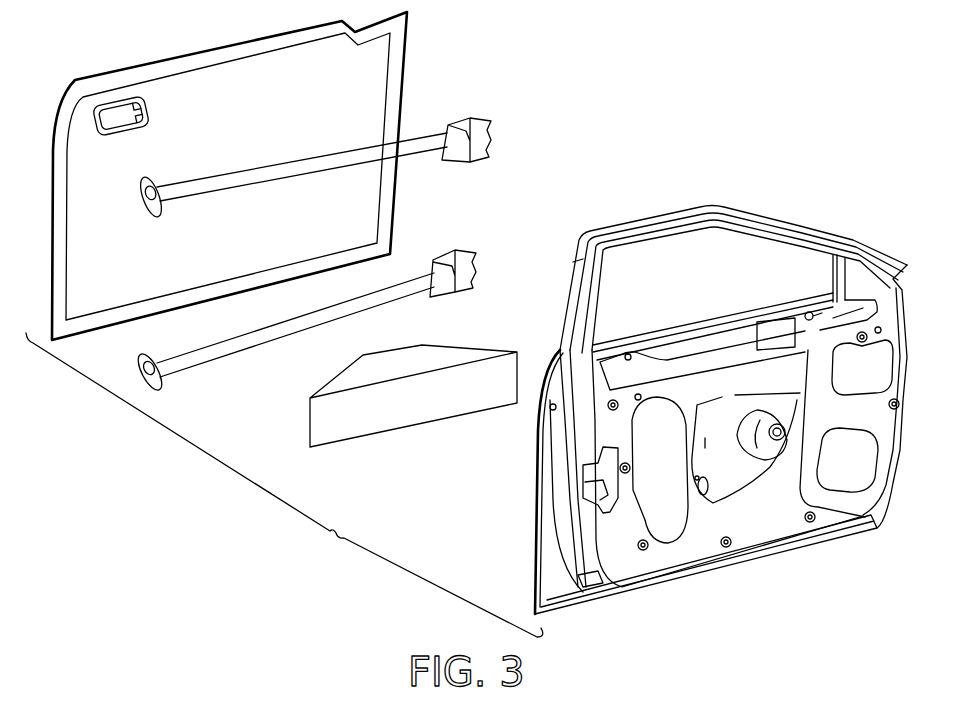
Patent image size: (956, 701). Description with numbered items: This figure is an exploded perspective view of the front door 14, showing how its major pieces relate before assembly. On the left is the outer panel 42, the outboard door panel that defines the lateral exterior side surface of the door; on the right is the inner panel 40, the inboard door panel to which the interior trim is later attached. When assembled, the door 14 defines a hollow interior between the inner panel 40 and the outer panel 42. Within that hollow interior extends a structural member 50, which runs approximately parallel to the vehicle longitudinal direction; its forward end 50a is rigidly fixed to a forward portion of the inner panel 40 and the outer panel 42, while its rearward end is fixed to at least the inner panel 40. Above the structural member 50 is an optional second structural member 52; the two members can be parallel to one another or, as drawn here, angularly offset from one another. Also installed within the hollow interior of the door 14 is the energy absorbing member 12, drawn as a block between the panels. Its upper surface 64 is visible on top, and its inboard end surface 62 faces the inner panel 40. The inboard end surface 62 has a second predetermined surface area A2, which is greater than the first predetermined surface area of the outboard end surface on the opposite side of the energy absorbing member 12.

The energy absorbing member 12 is at (421, 393).
The front door 14 is at (284, 485).
The inner panel 40 is at (578, 555).
The outer panel 42 is at (357, 80).
The structural member 50 is at (237, 351).
The forward end 50a is at (477, 260).
The second structural member 52 is at (283, 165).
The inboard end surface 62 is at (373, 408).
The upper surface 64 is at (400, 367).
The second predetermined surface area A2 is at (452, 392).